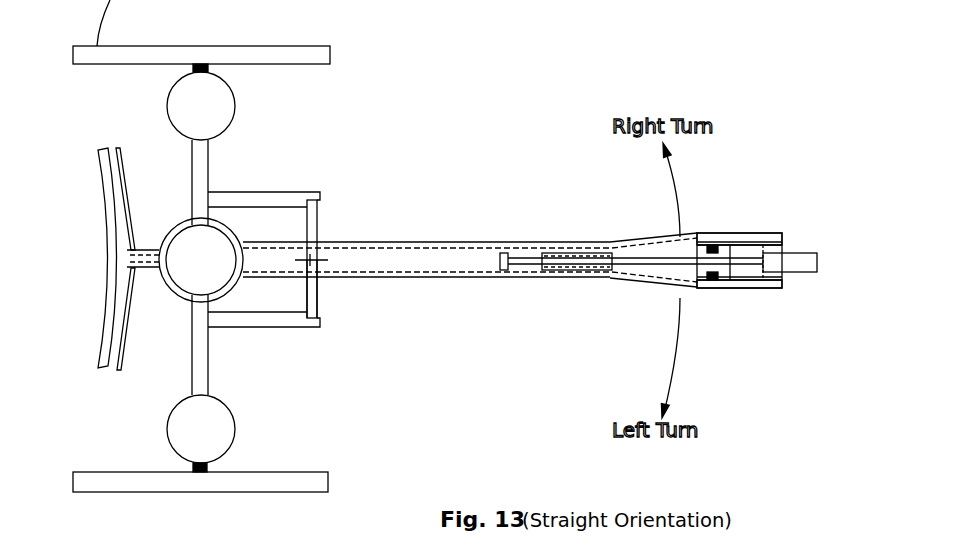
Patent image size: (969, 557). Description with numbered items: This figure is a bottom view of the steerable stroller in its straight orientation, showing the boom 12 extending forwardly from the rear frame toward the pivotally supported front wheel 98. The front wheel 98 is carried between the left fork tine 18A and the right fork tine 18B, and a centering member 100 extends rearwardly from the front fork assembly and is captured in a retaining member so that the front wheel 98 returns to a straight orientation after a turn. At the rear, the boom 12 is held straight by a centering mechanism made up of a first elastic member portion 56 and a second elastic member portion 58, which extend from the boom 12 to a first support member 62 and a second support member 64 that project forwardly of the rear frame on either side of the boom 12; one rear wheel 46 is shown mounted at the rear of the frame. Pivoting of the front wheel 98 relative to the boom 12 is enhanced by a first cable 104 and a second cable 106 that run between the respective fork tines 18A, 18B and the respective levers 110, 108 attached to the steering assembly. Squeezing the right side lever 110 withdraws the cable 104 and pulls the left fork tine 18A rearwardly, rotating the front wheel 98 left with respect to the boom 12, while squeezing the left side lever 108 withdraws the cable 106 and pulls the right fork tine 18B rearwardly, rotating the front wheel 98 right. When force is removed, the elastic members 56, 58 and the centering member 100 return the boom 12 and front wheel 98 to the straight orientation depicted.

The boom 12 is at (410, 242).
The rear wheel 46 is at (198, 492).
The first elastic member portion 56 is at (318, 295).
The second elastic member portion 58 is at (318, 225).
The first support member 62 is at (262, 328).
The second support member 64 is at (265, 192).
The front wheel 98 is at (782, 233).
The centering member 100 is at (558, 272).
The first cable 104 is at (662, 282).
The second cable 106 is at (662, 240).
The left side lever 108 is at (126, 350).
The right side lever 110 is at (124, 168).
The left fork tine 18A is at (765, 288).
The right fork tine 18B is at (765, 233).